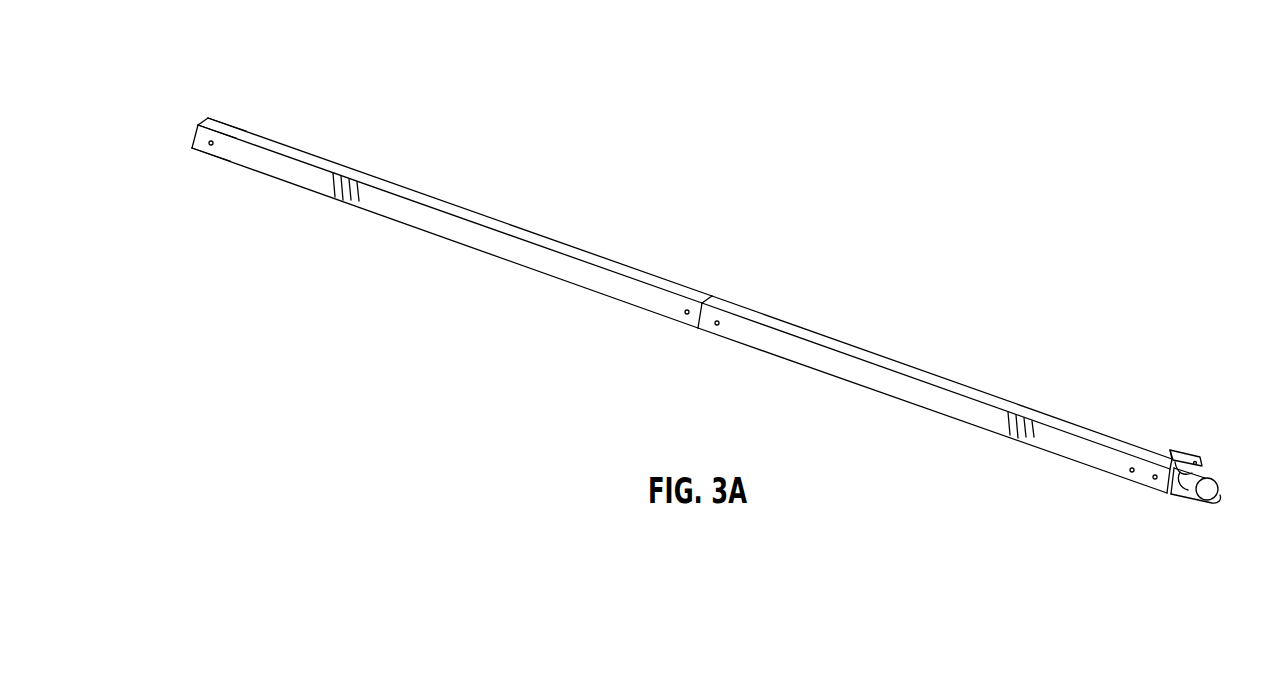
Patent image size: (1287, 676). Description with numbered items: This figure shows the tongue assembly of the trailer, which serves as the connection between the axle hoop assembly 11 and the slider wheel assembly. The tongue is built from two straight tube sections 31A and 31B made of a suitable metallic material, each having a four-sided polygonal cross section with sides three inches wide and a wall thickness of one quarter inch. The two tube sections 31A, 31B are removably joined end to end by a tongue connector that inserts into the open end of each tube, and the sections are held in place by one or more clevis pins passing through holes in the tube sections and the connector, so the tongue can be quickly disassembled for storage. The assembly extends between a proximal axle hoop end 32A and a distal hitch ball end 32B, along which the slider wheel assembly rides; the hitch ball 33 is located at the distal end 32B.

The axle hoop assembly 11 is at (1062, 218).
The straight tube section 31A is at (492, 218).
The straight tube section 31B is at (864, 353).
The proximal axle hoop end 32A is at (193, 131).
The distal hitch ball end 32B is at (1183, 497).
The hitch coupler ball 33 is at (1213, 488).